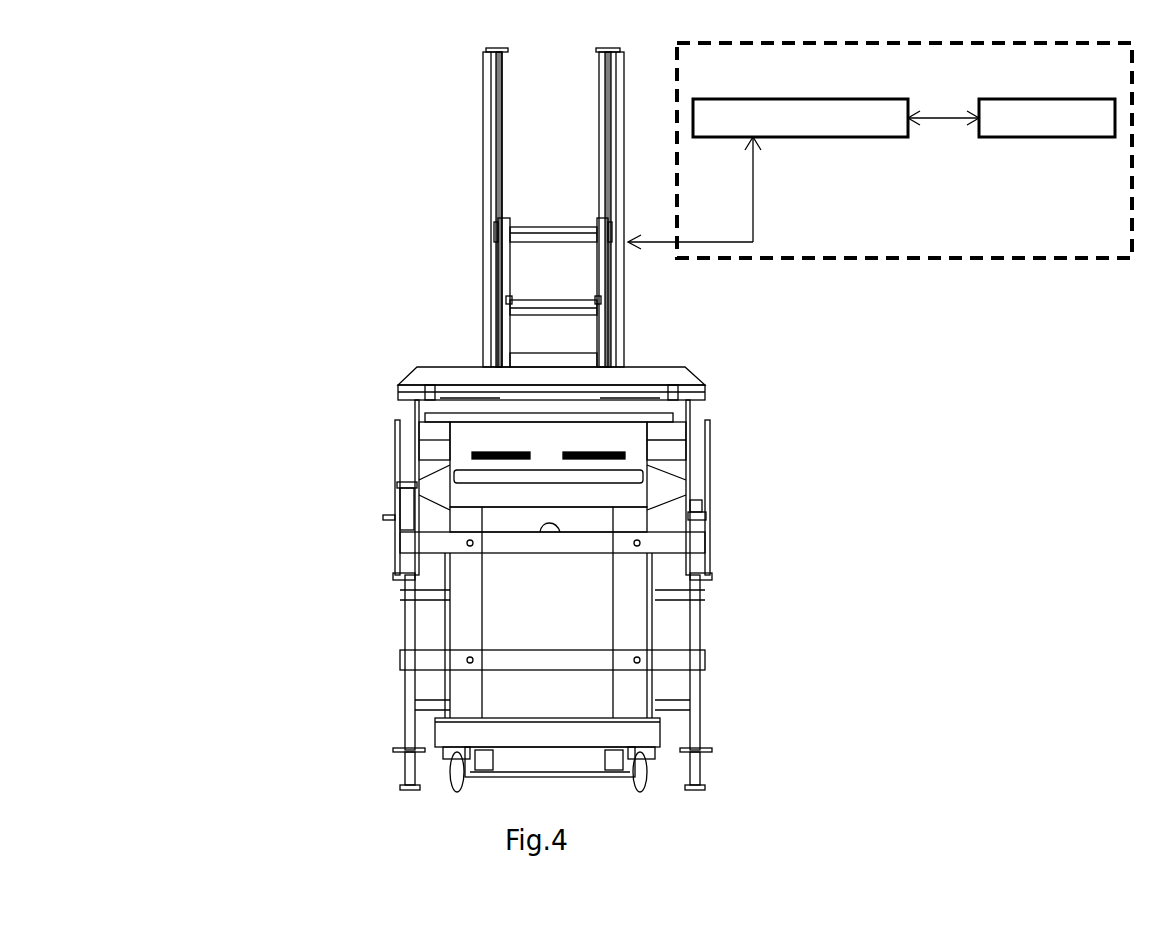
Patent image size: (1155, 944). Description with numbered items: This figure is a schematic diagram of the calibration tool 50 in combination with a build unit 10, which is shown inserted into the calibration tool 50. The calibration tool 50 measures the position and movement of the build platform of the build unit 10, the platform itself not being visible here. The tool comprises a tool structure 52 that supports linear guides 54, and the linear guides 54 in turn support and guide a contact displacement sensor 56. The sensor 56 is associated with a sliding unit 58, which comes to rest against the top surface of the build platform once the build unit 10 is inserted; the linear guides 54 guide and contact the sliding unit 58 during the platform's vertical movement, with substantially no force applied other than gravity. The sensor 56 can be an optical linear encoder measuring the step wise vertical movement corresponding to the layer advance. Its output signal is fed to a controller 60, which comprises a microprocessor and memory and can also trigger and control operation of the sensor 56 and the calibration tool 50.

The build unit 10 is at (580, 627).
The calibration tool 50 is at (306, 376).
The tool structure 52 is at (688, 492).
The linear guides 54 is at (487, 170).
The contact displacement sensor 56 is at (488, 237).
The sliding unit 58 is at (516, 310).
The controller 60 is at (977, 236).